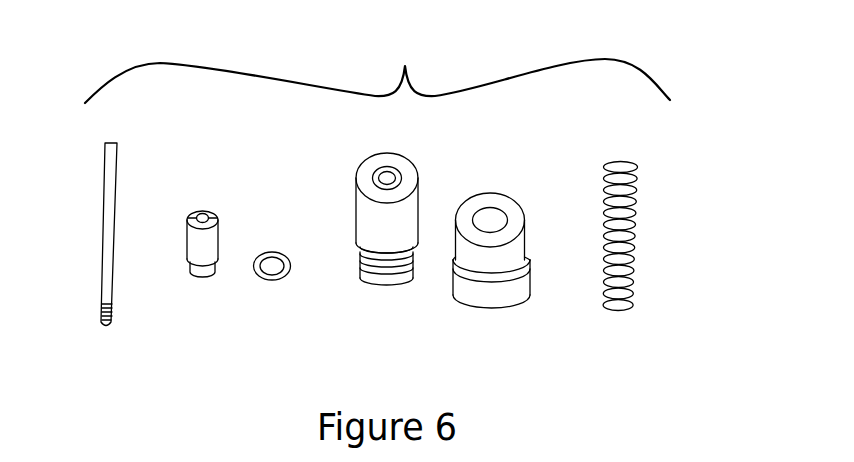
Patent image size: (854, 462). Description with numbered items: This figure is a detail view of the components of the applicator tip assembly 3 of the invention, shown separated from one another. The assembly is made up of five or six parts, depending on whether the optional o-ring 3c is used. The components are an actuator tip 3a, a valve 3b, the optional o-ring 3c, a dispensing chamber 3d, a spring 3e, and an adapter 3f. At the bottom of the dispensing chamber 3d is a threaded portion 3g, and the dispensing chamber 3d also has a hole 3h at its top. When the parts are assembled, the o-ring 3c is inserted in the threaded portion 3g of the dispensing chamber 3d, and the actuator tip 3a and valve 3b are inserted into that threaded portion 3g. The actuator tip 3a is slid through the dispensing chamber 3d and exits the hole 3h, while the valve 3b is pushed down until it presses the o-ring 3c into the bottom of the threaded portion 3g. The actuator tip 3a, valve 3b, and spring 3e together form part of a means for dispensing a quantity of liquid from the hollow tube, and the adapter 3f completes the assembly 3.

The applicator tip assembly 3 is at (377, 70).
The actuator tip 3a is at (114, 288).
The valve 3b is at (218, 260).
The o-ring 3c is at (281, 281).
The dispensing chamber 3d is at (348, 217).
The spring 3e is at (625, 252).
The adapter 3f is at (527, 245).
The threaded portion 3g is at (392, 272).
The hole 3h is at (393, 175).